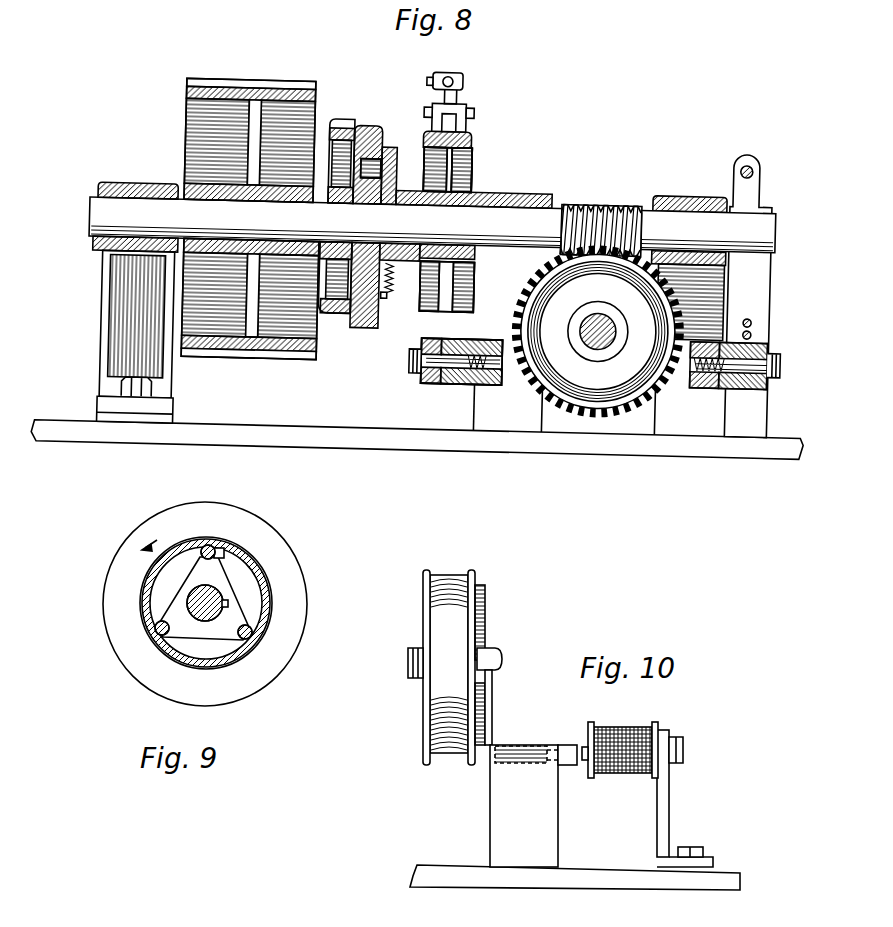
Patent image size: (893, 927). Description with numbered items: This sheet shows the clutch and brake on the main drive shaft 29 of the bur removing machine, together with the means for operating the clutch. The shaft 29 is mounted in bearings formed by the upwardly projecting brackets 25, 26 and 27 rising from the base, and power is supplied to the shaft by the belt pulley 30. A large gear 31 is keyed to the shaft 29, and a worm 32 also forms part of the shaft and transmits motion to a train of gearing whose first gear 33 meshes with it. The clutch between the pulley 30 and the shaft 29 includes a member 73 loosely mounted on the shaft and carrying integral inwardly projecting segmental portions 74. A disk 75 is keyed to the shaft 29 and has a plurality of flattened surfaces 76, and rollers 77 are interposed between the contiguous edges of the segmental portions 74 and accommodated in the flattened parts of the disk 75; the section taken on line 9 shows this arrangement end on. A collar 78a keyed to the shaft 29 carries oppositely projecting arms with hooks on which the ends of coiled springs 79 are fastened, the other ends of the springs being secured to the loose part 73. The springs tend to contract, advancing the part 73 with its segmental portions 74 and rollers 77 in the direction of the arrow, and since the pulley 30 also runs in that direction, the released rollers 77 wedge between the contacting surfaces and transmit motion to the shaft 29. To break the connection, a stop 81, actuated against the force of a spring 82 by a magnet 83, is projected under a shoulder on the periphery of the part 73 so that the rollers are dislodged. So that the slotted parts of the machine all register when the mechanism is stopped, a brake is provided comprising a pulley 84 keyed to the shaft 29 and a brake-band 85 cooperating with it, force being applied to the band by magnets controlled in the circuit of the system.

In FIG. 8, the upwardly projecting bracket 26 is at (592, 421).
In FIG. 8, the upwardly projecting bracket 25 is at (487, 395).
In FIG. 8, the upwardly projecting bracket 27 is at (712, 394).
In FIG. 8, the main drive shaft 29 is at (142, 181).
In FIG. 9, the main drive shaft 29 is at (214, 597).
In FIG. 8, the large gear 31 is at (240, 80).
In FIG. 8, the worm 32 is at (592, 200).
In FIG. 8, the gear 33 is at (597, 341).
In FIG. 8, the belt pulley 30 is at (351, 312).
In FIG. 9, the belt pulley 30 is at (303, 607).
In FIG. 10, the belt pulley 30 is at (441, 750).
In FIG. 8, the segmental portions 74 is at (371, 313).
In FIG. 9, the segmental portions 74 is at (244, 557).
In FIG. 8, the disk 75 is at (347, 262).
In FIG. 9, the disk 75 is at (203, 598).
In FIG. 9, the flattened surfaces 76 is at (224, 548).
In FIG. 8, the rollers 77 is at (368, 150).
In FIG. 9, the rollers 77 is at (206, 547).
In FIG. 8, the clutch member 73 is at (362, 160).
In FIG. 8, the coiled springs 79 is at (392, 281).
In FIG. 8, the brake-band 85 is at (443, 128).
In FIG. 8, the brake pulley 84 is at (470, 132).
In FIG. 8, the collar 78a is at (461, 161).
In FIG. 10, the stop 81 is at (487, 665).
In FIG. 10, the spring 82 is at (532, 745).
In FIG. 10, the magnet 83 is at (620, 733).
In FIG. 8, the section line 9- 9 is at (381, 113).